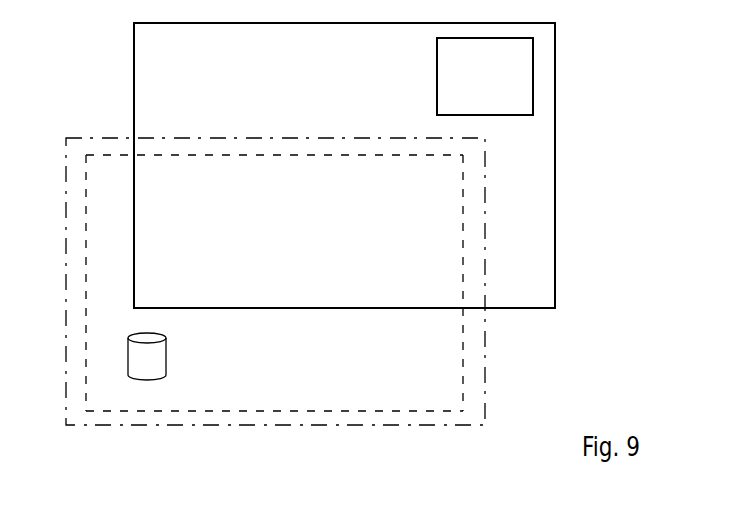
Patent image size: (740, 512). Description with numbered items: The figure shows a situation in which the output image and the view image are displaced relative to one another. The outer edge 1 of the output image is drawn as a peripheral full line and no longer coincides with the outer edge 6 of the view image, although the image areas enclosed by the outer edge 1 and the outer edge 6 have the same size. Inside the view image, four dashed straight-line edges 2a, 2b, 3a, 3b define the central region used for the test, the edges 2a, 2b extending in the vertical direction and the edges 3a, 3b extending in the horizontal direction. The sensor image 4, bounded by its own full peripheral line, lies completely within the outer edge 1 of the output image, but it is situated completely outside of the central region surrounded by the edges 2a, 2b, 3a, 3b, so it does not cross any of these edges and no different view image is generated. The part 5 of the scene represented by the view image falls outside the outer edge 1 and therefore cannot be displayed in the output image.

The outer edge 1 is at (555, 162).
The edge 2a is at (463, 337).
The edge 2b is at (87, 271).
The edge 3a is at (238, 411).
The edge 3b is at (255, 155).
The sensor image 4 is at (520, 115).
The part of the scene 5 is at (166, 370).
The outer edge of the view image 6 is at (485, 368).